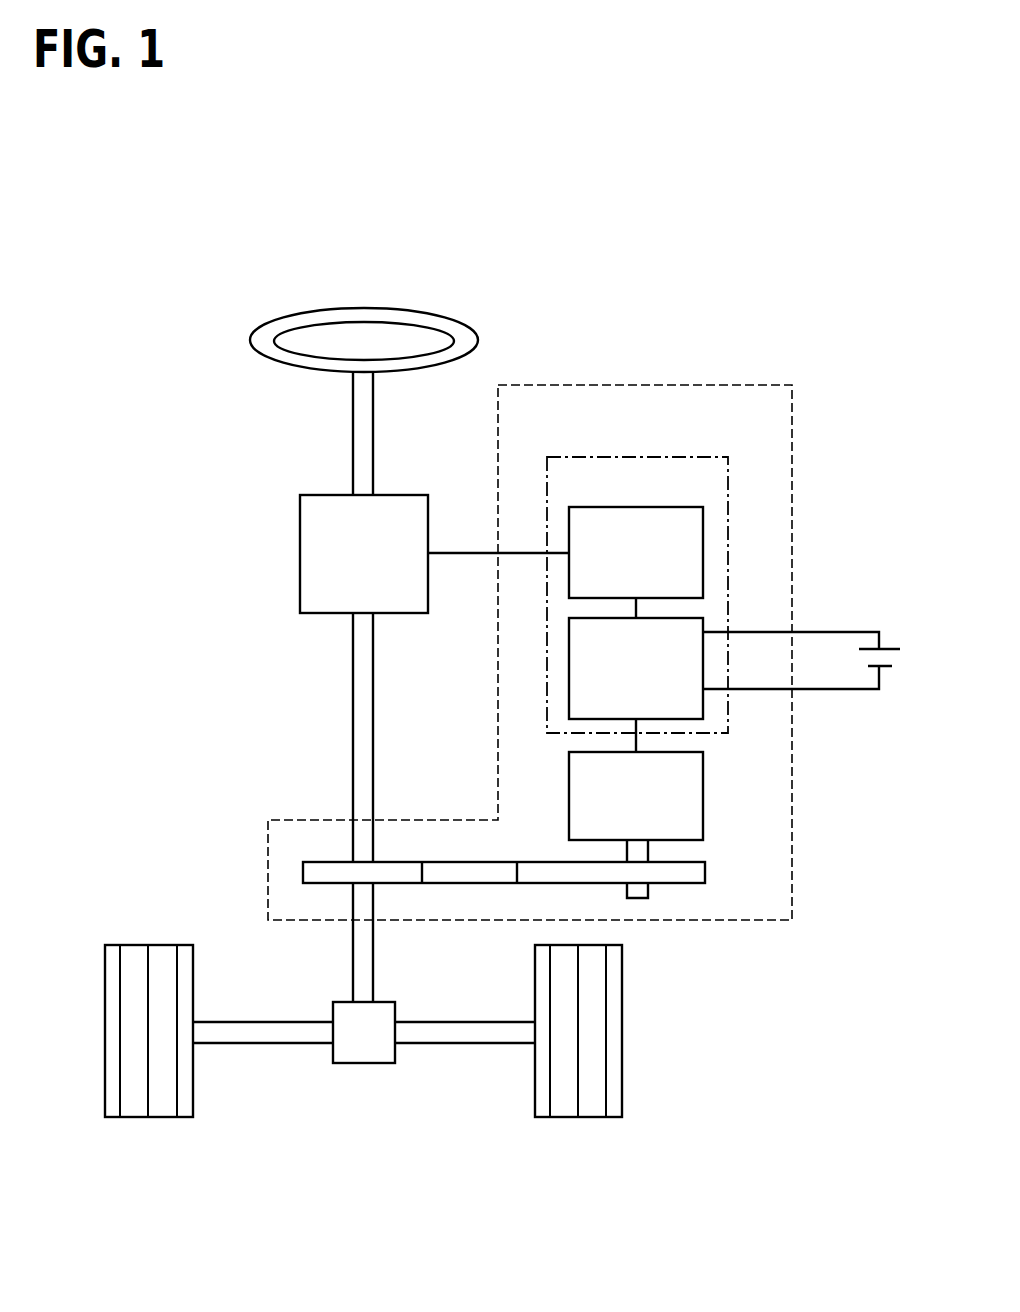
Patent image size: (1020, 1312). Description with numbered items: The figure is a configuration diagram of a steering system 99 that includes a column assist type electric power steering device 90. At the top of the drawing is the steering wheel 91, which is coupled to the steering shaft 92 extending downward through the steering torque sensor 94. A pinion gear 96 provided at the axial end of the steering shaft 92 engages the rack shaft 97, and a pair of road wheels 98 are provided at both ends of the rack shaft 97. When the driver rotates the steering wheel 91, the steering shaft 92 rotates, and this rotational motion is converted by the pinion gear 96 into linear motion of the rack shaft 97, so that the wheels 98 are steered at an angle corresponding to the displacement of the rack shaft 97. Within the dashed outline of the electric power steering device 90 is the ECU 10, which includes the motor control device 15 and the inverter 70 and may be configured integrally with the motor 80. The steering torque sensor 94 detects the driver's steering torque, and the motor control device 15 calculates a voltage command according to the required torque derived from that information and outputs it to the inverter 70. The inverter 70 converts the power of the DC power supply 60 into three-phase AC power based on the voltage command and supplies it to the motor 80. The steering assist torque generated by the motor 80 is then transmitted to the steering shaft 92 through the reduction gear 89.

The steering system 99 is at (212, 734).
The electric power steering device 90 is at (655, 385).
The steering wheel 91 is at (250, 345).
The steering shaft 92 is at (353, 412).
The steering torque sensor 94 is at (300, 552).
The ECU 10 is at (634, 456).
The motor control device 15 is at (706, 541).
The inverter 70 is at (703, 705).
The DC power supply 60 is at (888, 646).
The motor 80 is at (703, 795).
The reduction gear 89 is at (705, 870).
The pinion gear 96 is at (366, 1064).
The rack shaft 97 is at (257, 1045).
The road wheels 98 is at (164, 1118).